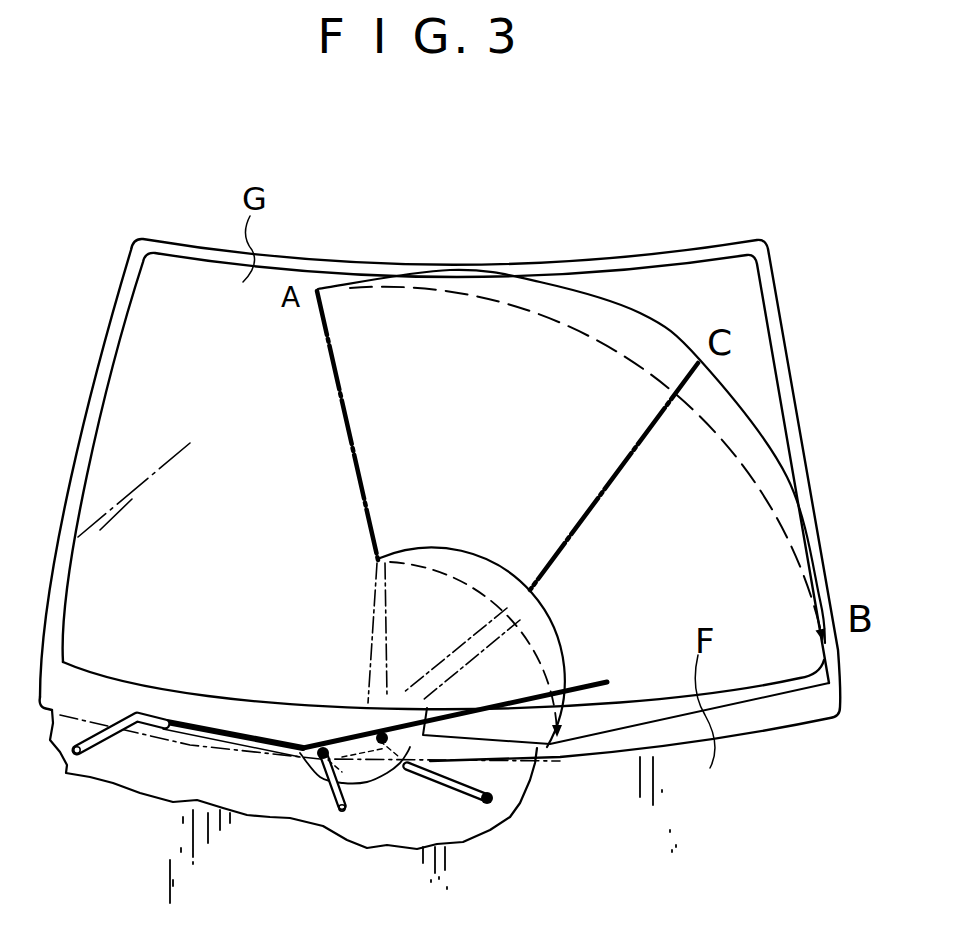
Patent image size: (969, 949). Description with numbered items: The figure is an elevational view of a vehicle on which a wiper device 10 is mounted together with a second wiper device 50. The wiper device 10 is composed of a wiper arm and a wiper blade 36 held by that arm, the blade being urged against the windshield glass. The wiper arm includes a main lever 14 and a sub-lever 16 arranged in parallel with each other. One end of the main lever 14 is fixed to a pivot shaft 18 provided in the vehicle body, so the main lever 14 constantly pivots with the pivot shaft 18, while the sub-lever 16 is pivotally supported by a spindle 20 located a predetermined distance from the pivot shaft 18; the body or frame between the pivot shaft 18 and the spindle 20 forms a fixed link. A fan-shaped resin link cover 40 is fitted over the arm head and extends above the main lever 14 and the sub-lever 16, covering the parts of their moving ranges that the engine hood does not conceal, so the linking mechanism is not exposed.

The wiper device 10 is at (327, 672).
The main lever 14 is at (330, 790).
The sub-lever 16 is at (447, 797).
The pivot shaft 18 is at (342, 810).
The spindle 20 is at (490, 802).
The wiper blade 36 is at (340, 420).
The link cover 40 is at (373, 783).
The second wiper device 50 is at (102, 733).